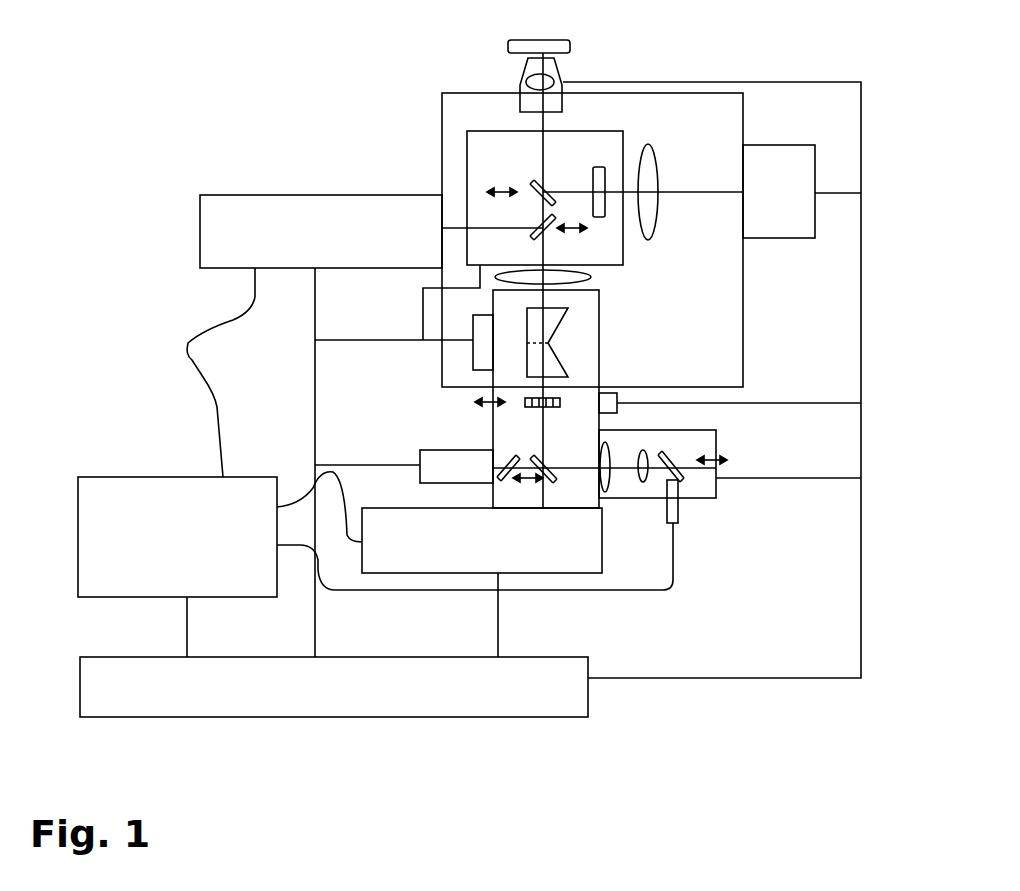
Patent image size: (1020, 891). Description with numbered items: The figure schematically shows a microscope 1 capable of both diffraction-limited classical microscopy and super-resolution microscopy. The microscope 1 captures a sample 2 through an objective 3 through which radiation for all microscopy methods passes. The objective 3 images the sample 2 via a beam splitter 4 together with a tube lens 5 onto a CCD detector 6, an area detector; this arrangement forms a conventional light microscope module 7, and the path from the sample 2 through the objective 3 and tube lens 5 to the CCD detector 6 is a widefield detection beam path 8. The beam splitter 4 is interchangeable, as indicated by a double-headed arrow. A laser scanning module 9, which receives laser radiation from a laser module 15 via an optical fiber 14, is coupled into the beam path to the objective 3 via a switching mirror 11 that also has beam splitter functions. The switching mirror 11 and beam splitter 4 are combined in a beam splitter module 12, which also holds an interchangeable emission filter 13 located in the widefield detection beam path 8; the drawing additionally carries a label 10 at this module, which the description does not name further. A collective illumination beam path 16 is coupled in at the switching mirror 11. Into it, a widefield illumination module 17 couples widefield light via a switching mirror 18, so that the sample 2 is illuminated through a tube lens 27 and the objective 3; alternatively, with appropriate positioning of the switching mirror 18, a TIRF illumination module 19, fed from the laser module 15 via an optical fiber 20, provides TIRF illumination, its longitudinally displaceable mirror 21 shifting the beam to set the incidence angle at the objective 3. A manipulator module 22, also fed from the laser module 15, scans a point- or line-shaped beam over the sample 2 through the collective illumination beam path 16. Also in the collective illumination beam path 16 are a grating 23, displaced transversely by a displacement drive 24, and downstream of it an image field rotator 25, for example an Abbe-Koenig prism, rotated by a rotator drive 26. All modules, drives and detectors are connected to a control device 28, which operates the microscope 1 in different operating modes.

The microscope 1 is at (367, 72).
The sample 2 is at (508, 43).
The objective 3 is at (565, 64).
The beam splitter 4 is at (532, 196).
The tube lens 5 is at (657, 217).
The CCD detector 6 is at (763, 145).
The light microscope module 7 is at (440, 146).
The widefield detection beam path 8 is at (676, 190).
The laser scanning module 9 is at (240, 195).
The beam splitter unit 10 is at (455, 228).
The switching mirror 11 is at (533, 230).
The beam splitter module 12 is at (627, 262).
The emission filter 13 is at (590, 176).
The optical fiber 14 is at (214, 402).
The laser module 15 is at (88, 477).
The collective illumination beam path 16 is at (578, 257).
The widefield illumination module 17 is at (430, 450).
The switching mirror 18 is at (512, 462).
The TIRF illumination module 19 is at (700, 502).
The optical fiber 20 is at (653, 586).
The mirror 21 is at (681, 470).
The manipulator module 22 is at (432, 591).
The grating 23 is at (557, 410).
The displacement drive 24 is at (617, 410).
The image field rotator 25 is at (566, 355).
The rotator drive 26 is at (472, 362).
The tube lens 27 is at (492, 277).
The control device 28 is at (588, 717).